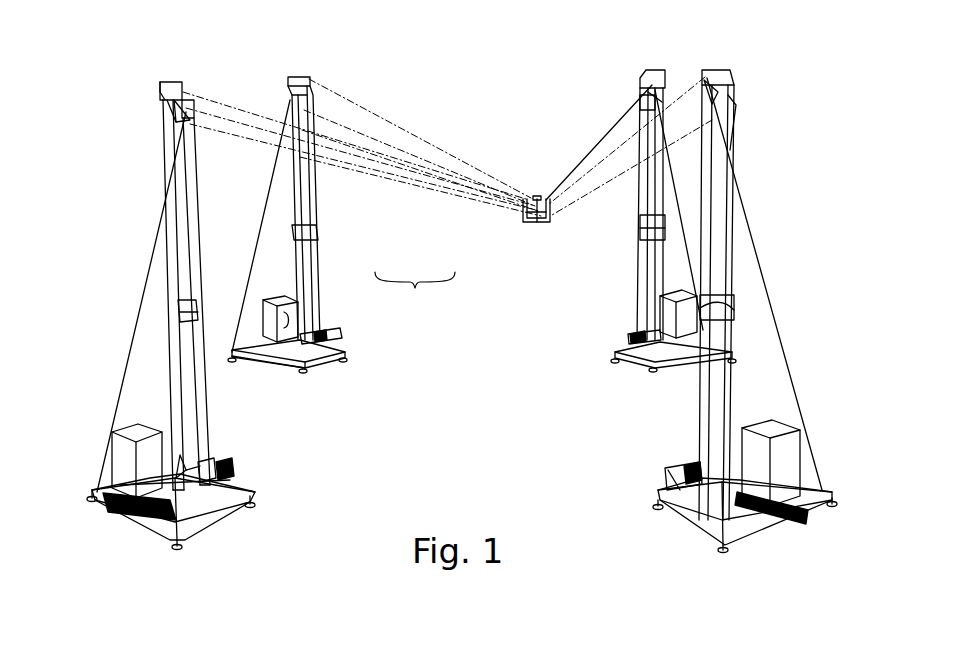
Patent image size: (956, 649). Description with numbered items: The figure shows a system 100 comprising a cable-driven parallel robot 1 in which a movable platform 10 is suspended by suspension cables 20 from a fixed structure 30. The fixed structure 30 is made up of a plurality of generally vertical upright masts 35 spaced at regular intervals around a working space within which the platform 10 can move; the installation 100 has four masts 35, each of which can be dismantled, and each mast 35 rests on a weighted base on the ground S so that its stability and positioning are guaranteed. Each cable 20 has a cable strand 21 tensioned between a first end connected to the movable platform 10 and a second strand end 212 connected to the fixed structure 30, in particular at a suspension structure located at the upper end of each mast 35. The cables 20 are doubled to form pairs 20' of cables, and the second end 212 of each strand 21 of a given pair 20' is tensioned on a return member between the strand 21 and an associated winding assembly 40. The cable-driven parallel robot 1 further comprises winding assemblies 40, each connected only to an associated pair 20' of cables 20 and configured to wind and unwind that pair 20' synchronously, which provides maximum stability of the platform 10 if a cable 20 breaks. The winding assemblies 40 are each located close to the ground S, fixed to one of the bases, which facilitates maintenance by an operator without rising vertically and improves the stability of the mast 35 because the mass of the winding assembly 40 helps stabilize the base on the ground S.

The system 100 is at (124, 150).
The cable-driven parallel robot 1 is at (541, 181).
The movable platform 10 is at (530, 228).
The suspension cable 20 is at (506, 153).
The pair of cables 20' is at (415, 291).
The cable strand 21 is at (212, 88).
The second strand end 212 is at (185, 120).
The fixed structure 30 is at (734, 70).
The mast 35 is at (200, 385).
The winding assembly 40 is at (233, 470).
The ground S is at (237, 515).